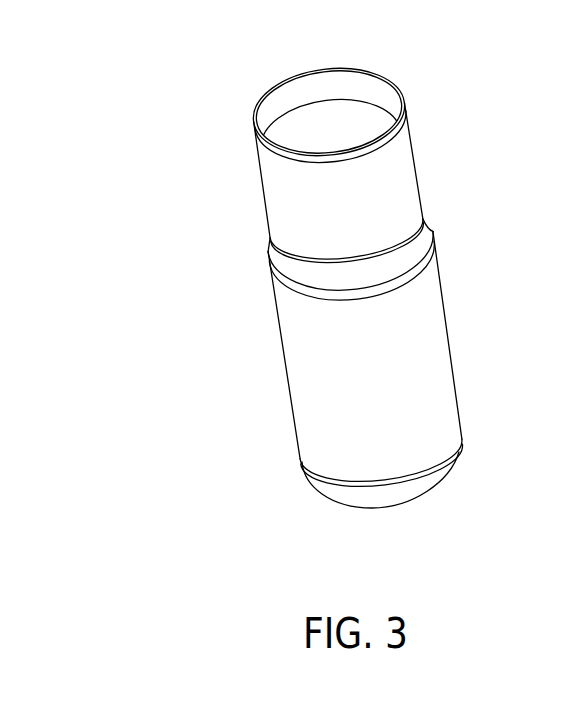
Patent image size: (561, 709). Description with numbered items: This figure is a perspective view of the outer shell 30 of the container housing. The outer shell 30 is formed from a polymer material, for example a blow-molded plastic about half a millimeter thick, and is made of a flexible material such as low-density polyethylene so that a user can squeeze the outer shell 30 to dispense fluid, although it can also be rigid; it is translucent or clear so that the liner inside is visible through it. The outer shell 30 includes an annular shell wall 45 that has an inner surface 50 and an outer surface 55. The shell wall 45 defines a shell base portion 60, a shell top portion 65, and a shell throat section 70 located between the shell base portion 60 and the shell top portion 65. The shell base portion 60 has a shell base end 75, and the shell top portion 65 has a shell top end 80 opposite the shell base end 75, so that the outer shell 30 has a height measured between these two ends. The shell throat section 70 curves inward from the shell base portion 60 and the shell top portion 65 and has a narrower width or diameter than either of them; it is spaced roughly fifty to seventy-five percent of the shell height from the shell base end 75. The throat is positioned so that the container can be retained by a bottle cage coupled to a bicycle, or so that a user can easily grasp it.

The outer shell 30 is at (119, 62).
The annular shell wall 45 is at (418, 156).
The inner surface 50 is at (316, 102).
The outer surface 55 is at (381, 367).
The shell base portion 60 is at (310, 417).
The shell top portion 65 is at (272, 198).
The shell throat section 70 is at (421, 233).
The shell base end 75 is at (395, 512).
The shell top end 80 is at (328, 67).